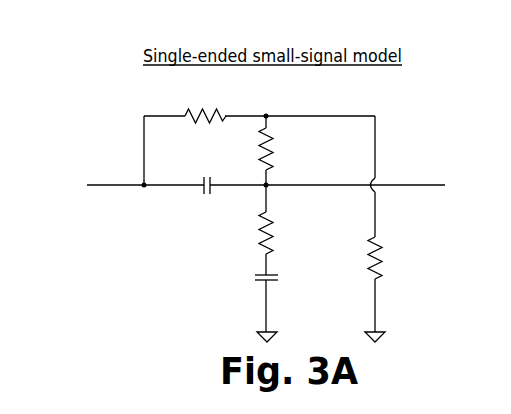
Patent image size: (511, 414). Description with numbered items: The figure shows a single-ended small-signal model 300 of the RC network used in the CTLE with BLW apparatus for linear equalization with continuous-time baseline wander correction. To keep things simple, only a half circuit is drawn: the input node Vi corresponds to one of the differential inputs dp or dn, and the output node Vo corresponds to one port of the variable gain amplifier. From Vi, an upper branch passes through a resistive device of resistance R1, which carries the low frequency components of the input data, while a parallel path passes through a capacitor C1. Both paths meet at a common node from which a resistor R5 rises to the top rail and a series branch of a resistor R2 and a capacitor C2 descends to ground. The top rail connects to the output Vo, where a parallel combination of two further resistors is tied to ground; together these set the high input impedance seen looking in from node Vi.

The single-ended small-signal model 300 is at (55, 66).
The resistive device of resistance R1 is at (205, 100).
The resistor R5 is at (284, 149).
The resistor R2 is at (284, 233).
The capacitor C1 is at (209, 173).
The capacitor C2 is at (251, 286).